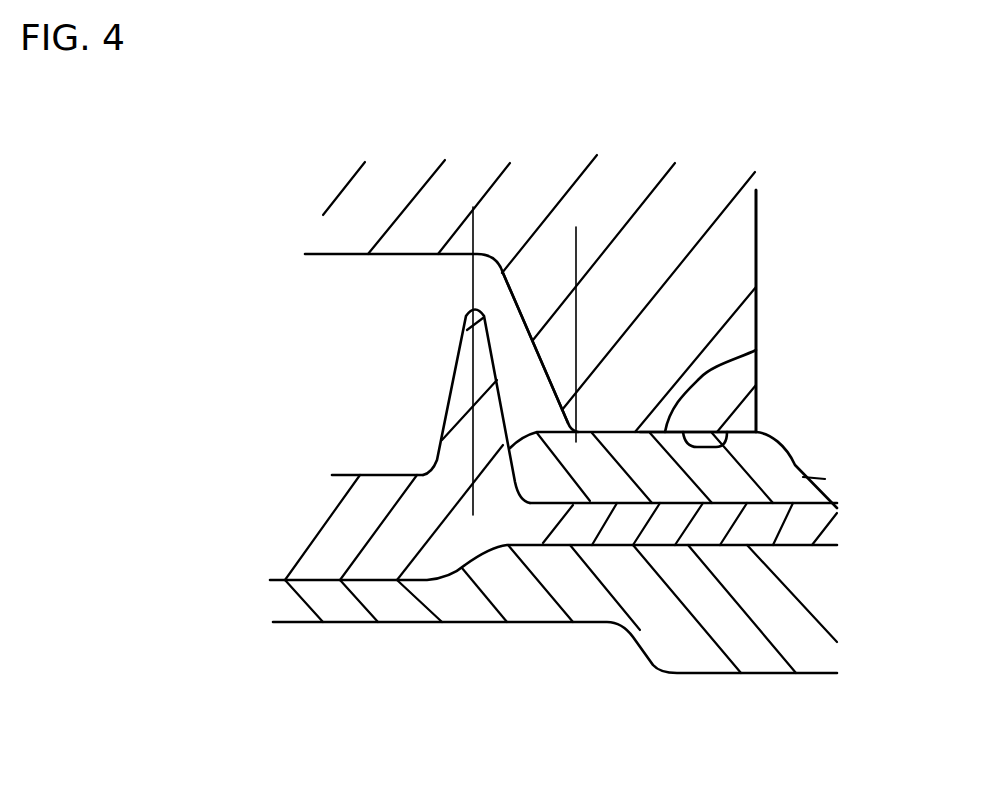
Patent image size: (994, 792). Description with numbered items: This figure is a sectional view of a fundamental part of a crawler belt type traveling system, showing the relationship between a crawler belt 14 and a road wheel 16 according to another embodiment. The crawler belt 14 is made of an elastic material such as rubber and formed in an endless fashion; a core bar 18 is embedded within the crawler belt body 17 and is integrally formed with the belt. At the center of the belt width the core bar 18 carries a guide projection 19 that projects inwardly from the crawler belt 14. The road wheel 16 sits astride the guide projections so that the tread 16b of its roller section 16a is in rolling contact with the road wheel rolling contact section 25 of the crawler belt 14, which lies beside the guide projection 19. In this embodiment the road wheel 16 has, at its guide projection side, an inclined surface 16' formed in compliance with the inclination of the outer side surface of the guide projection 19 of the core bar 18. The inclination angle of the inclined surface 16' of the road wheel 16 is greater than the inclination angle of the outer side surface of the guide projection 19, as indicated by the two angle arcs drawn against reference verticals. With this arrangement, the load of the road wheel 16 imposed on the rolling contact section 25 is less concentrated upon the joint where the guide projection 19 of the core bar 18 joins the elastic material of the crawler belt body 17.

The crawler belt 14 is at (550, 630).
The road wheel 16 is at (567, 277).
The inclined surface 16' is at (480, 348).
The roller section 16a is at (737, 284).
The tread 16b is at (760, 423).
The crawler belt body 17 is at (730, 622).
The core bar 18 is at (795, 464).
The guide projection 19 is at (453, 398).
The road wheel rolling contact section 25 is at (756, 350).